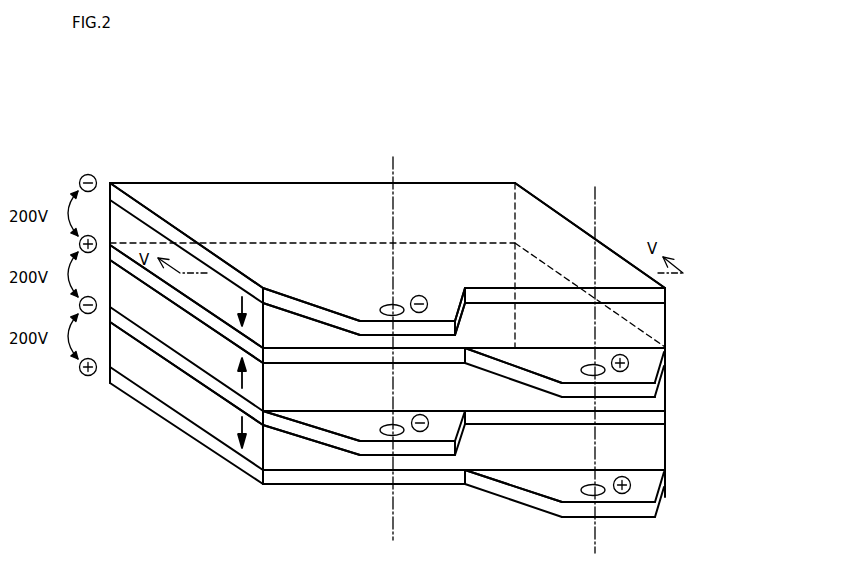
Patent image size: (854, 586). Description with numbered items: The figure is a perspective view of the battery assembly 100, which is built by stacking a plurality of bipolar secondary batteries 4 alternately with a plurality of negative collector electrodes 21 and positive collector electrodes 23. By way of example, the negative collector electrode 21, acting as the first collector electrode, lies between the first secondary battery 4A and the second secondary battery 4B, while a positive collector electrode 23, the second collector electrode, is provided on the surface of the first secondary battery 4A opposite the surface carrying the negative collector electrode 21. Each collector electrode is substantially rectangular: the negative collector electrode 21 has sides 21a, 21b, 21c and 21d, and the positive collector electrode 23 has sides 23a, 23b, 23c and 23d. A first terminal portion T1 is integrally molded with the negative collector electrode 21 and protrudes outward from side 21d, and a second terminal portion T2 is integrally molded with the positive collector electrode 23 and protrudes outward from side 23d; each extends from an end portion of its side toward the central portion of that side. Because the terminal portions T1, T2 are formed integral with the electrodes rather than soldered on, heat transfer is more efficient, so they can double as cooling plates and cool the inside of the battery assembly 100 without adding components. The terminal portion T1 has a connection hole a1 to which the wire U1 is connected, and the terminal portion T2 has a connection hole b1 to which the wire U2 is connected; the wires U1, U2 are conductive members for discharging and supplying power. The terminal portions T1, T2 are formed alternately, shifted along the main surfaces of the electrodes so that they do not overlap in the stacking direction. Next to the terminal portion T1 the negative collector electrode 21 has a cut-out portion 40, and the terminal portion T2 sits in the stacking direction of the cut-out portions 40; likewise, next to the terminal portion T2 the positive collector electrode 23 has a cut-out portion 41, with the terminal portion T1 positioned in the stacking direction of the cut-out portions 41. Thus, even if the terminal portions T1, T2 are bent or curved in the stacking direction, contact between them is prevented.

The battery assembly 100 is at (325, 107).
The bipolar secondary battery 4 is at (654, 328).
The first secondary battery 4A is at (222, 364).
The second secondary battery 4B is at (222, 428).
The negative collector electrode 21 is at (657, 297).
The side of negative collector electrode 21a is at (541, 200).
The side of negative collector electrode 21b is at (484, 183).
The side of negative collector electrode 21c is at (160, 213).
The side of negative collector electrode 21d is at (478, 288).
The positive collector electrode 23 is at (664, 362).
The side of positive collector electrode 23a is at (628, 322).
The side of positive collector electrode 23b is at (267, 243).
The side of positive collector electrode 23c is at (215, 316).
The side of positive collector electrode 23d is at (287, 352).
The first terminal portion T1 is at (346, 313).
The second terminal portion T2 is at (643, 371).
The cut-out portion 40 is at (567, 287).
The cut-out portion 41 is at (440, 352).
The connection hole a1 is at (390, 302).
The connection hole b1 is at (596, 364).
The wire U1 is at (395, 161).
The wire U2 is at (597, 196).